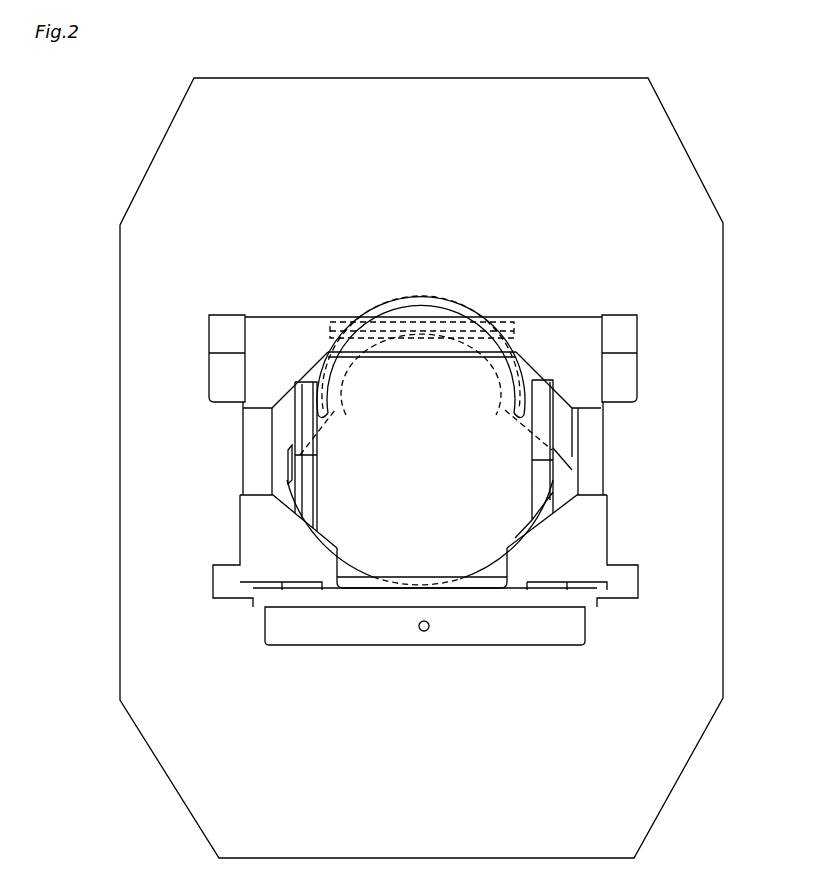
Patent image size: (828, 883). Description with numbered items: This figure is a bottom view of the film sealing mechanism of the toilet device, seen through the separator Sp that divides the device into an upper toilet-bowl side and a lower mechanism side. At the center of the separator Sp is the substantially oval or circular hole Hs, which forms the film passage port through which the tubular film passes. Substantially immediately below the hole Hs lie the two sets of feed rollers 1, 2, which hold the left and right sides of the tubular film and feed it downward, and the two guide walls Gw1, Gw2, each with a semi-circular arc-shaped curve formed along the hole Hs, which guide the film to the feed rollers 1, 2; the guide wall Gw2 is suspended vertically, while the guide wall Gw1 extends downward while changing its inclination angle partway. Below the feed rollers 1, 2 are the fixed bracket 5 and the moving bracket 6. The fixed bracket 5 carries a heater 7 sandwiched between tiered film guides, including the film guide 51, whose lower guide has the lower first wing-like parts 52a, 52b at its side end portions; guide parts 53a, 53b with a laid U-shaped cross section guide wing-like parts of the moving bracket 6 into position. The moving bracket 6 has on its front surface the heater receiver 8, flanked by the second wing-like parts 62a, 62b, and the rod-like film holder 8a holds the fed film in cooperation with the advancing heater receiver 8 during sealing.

The separator Sp is at (655, 176).
The fixed bracket 5 is at (303, 313).
The lower first wing-like part 52b is at (252, 381).
The lower first wing-like part 52a is at (586, 381).
The guide part 53b is at (262, 452).
The guide part 53a is at (588, 452).
The second wing-like part 62b is at (258, 533).
The second wing-like part 62a is at (590, 533).
The feed roller 2 is at (323, 459).
The feed roller 1 is at (530, 456).
The film guide 51 is at (358, 457).
The heater receiver 8 is at (420, 577).
The film holder 8a is at (467, 421).
The hole Hs is at (475, 372).
The guide wall Gw1 is at (358, 375).
The heater 7 is at (445, 353).
The guide wall Gw2 is at (505, 530).
The moving bracket 6 is at (367, 609).